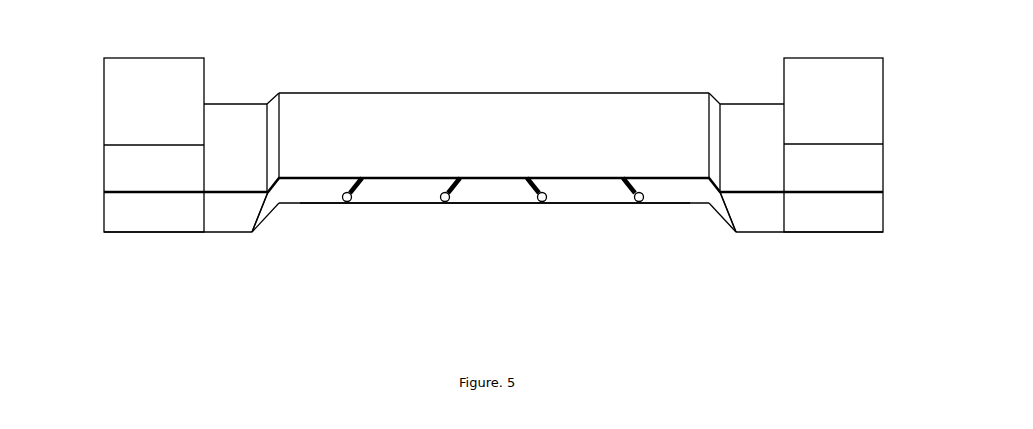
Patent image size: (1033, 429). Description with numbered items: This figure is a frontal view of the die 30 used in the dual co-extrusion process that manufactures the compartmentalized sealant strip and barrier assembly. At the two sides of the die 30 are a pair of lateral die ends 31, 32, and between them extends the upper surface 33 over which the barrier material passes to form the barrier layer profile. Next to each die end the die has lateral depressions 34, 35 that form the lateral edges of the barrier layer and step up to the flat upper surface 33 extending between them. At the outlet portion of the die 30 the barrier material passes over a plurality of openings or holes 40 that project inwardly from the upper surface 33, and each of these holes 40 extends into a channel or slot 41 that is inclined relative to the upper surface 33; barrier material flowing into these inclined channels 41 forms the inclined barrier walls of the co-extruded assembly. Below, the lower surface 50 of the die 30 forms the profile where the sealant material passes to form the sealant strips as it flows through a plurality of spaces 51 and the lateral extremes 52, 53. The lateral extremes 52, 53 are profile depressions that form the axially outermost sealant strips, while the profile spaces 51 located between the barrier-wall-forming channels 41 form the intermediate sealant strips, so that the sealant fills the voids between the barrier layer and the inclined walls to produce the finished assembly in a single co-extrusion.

The die 30 is at (504, 74).
The lateral die end 31 is at (127, 86).
The lateral die end 32 is at (843, 96).
The upper surface 33 is at (340, 108).
The depression 34 is at (764, 120).
The depression 35 is at (239, 123).
The holes 40 is at (370, 169).
The inclined channels 41 is at (355, 199).
The lower surface 50 is at (321, 219).
The spaces 51 is at (575, 211).
The lateral extreme 52 is at (297, 213).
The lateral extreme 53 is at (694, 208).